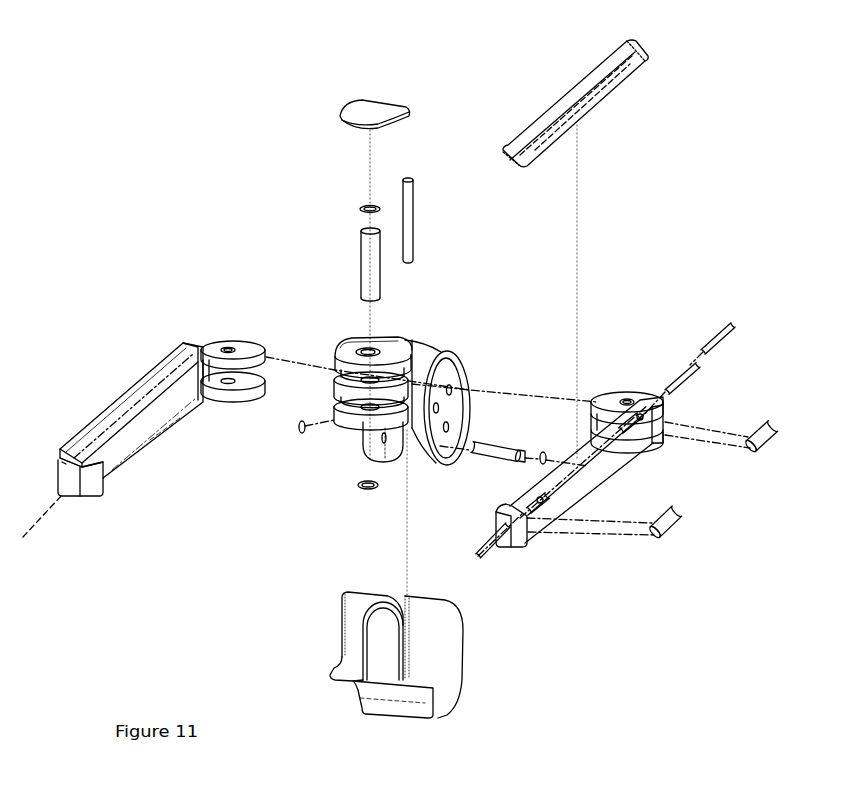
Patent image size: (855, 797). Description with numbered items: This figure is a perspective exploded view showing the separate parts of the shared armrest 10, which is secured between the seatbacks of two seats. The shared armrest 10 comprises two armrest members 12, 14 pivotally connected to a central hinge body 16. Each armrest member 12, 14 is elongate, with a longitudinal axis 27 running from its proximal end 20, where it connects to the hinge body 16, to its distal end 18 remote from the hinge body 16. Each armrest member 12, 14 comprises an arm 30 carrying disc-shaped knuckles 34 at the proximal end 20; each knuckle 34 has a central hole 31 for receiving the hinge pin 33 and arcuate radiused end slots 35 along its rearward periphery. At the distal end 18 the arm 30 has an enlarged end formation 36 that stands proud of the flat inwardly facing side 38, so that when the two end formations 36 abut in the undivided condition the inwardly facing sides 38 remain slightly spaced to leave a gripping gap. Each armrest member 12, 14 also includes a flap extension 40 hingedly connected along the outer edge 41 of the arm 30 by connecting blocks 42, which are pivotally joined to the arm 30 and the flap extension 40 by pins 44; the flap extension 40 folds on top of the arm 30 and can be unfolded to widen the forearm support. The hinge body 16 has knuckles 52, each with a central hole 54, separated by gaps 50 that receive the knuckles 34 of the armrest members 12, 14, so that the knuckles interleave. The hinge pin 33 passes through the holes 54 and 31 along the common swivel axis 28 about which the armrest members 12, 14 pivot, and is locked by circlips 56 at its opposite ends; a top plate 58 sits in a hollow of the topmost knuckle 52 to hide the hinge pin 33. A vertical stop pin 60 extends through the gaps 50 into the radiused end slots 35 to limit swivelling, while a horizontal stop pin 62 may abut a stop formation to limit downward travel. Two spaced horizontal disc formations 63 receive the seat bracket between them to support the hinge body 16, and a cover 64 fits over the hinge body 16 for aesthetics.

The shared armrest 10 is at (213, 129).
The armrest member 12 is at (133, 440).
The armrest member 14 is at (598, 473).
The hinge body 16 is at (408, 379).
The distal end 18 is at (51, 479).
The proximal end 20 is at (199, 331).
The longitudinal axis 27 is at (43, 518).
The common swivel axis 28 is at (368, 167).
The arm 30 is at (172, 412).
The central hole 31 is at (230, 346).
The hinge pin 33 is at (365, 252).
The disc-shaped knuckle 34 is at (253, 340).
The radiused end slot 35 is at (243, 328).
The enlarged end formation 36 is at (90, 497).
The inwardly facing side 38 is at (153, 423).
The flap extension 40 is at (598, 72).
The outer edge 41 is at (653, 447).
The connecting block 42 is at (777, 430).
The pin 44 is at (734, 330).
The gap 50 is at (342, 376).
The knuckle 52 is at (338, 352).
The central hole 54 is at (365, 346).
The circlip 56 is at (362, 206).
The top plate 58 is at (372, 98).
The vertical stop pin 60 is at (410, 203).
The horizontal stop pin 62 is at (492, 454).
The disc formation 63 is at (445, 372).
The cover 64 is at (355, 620).